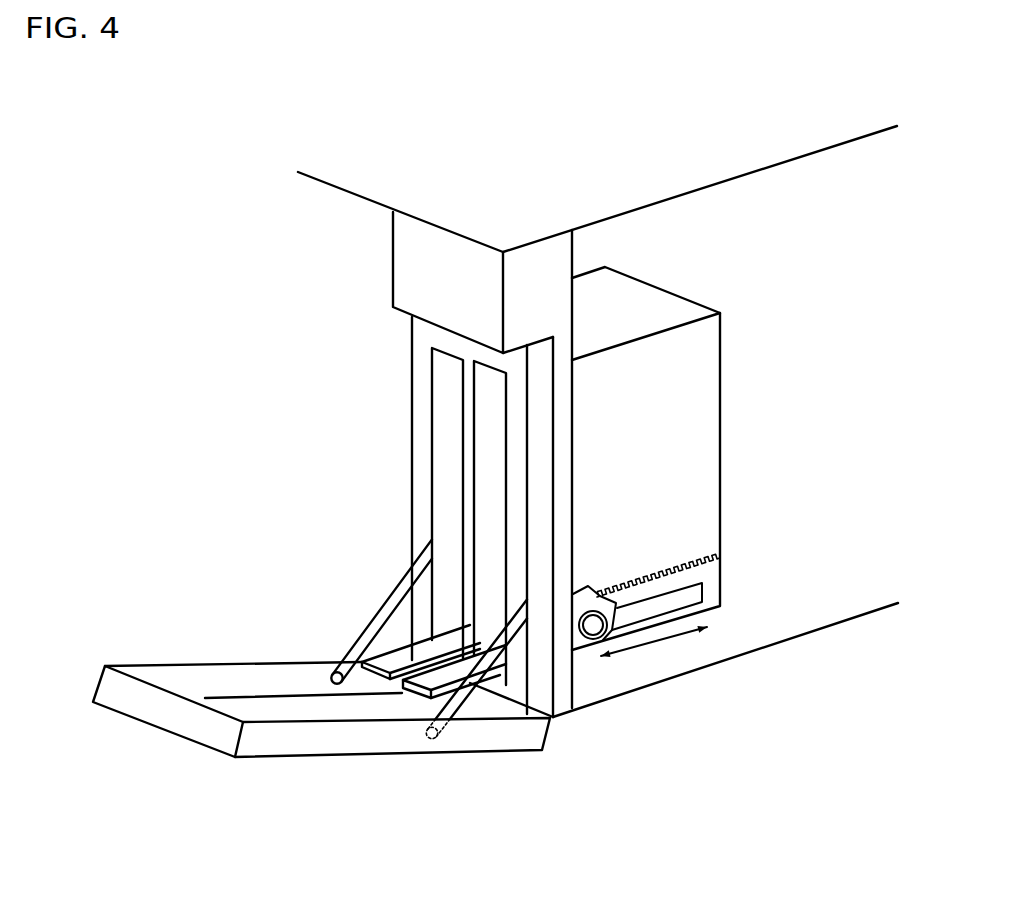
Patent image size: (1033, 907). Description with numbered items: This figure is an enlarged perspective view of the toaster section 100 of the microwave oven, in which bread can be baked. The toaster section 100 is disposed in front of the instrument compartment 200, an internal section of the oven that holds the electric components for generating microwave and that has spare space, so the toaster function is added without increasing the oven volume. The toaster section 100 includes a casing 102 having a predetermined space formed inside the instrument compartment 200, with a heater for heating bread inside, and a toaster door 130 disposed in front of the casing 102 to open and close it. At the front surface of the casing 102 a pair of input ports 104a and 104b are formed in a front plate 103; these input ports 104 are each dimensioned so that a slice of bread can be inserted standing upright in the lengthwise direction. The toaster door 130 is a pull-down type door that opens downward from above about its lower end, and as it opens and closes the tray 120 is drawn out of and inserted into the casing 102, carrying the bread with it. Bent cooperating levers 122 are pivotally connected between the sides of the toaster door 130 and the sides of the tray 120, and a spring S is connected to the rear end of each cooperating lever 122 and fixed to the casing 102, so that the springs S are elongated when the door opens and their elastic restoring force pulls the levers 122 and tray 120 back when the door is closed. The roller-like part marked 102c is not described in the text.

The instrument compartment 200 is at (810, 235).
The toaster section 100 is at (387, 407).
The front plate 103 is at (425, 335).
The input ports 104 is at (247, 453).
The input port 104a is at (450, 460).
The input port 104b is at (490, 503).
The casing 102 is at (682, 452).
The spring S is at (673, 554).
The roller 102c is at (692, 593).
The tray 120 is at (430, 679).
The cooperating levers 122 is at (467, 690).
The toaster door 130 is at (305, 738).